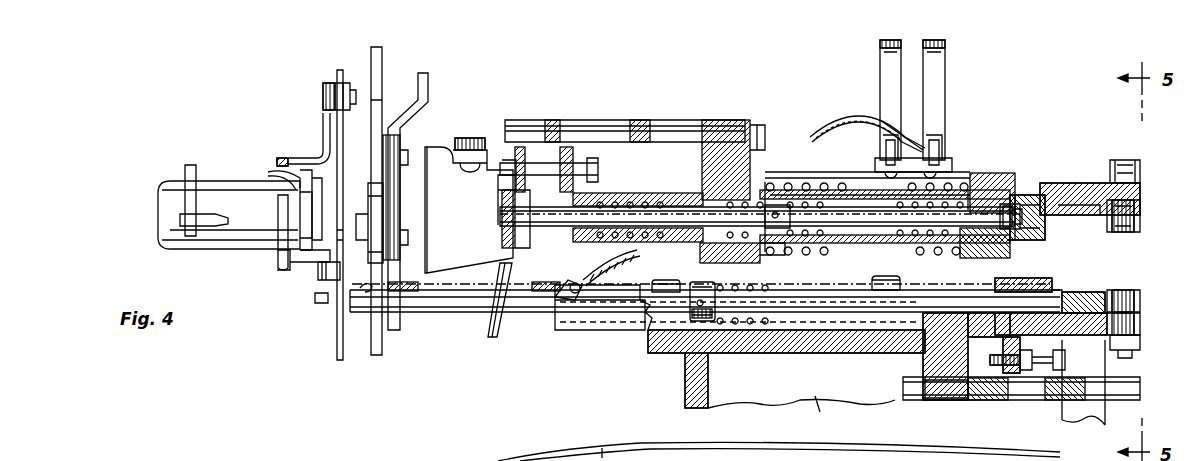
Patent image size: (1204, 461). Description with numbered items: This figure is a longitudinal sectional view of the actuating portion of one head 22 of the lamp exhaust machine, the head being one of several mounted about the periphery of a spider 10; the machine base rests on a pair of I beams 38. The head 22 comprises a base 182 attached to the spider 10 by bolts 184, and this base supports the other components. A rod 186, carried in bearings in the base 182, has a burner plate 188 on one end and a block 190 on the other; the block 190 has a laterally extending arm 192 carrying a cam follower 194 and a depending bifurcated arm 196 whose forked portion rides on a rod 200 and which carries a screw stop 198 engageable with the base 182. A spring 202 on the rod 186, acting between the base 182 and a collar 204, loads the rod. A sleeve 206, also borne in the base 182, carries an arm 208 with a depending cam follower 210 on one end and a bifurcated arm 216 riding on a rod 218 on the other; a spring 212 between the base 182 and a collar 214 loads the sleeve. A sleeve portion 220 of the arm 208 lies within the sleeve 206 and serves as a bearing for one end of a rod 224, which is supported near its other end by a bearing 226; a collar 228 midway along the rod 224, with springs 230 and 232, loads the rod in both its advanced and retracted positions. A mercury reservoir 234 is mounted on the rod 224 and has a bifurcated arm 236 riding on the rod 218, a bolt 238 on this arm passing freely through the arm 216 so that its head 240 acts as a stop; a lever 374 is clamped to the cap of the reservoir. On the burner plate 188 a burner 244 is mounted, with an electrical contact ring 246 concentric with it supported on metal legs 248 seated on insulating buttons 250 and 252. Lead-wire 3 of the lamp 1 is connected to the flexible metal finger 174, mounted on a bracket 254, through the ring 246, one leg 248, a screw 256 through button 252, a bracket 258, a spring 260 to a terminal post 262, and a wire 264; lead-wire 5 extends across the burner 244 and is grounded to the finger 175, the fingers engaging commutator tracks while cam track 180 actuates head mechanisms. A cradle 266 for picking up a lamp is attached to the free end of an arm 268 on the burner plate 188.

The lamp 1 is at (170, 203).
The lead-wire 3 is at (268, 172).
The lead-wire 5 is at (325, 245).
The spider 10 is at (822, 410).
The head 22 is at (755, 63).
The I beam 38 is at (428, 80).
The flexible metal finger 174 is at (945, 66).
The flexible metal finger 175 is at (880, 66).
The cam track 180 is at (1098, 292).
The base 182 is at (625, 325).
The bolt 184 is at (665, 280).
The rod 186 is at (443, 300).
The burner plate 188 is at (343, 265).
The block 190 is at (1040, 278).
The laterally extending arm 192 is at (1140, 324).
The cam follower 194 is at (1140, 300).
The bifurcated arm 196 is at (1003, 342).
The screw stop 198 is at (1050, 370).
The rod 200 is at (1140, 388).
The spring 202 is at (752, 320).
The collar 204 is at (700, 322).
The sleeve 206 is at (1024, 192).
The arm 208 is at (1058, 183).
The cam follower 210 is at (1140, 214).
The spring 212 is at (958, 178).
The collar 214 is at (770, 178).
The bifurcated arm 216 is at (562, 165).
The rod 218 is at (672, 128).
The sleeve portion 220 is at (1018, 228).
The rod 224 is at (855, 215).
The bearing 226 is at (572, 242).
The collar 228 is at (780, 243).
The spring 230 is at (633, 193).
The spring 232 is at (822, 207).
The mercury reservoir 234 is at (440, 160).
The bifurcated arm 236 is at (502, 160).
The bolt 238 is at (598, 168).
The head 240 is at (590, 160).
The burner 244 is at (318, 165).
The electrical contact ring 246 is at (278, 262).
The metal leg 248 is at (323, 125).
The insulating button 250 is at (335, 83).
The insulating button 252 is at (337, 318).
The bracket 254 is at (835, 178).
The screw 256 is at (318, 272).
The bracket 258 is at (367, 290).
The spring 260 is at (540, 292).
The terminal post 262 is at (576, 302).
The wire 264 is at (850, 118).
The cradle 266 is at (190, 165).
The arm 268 is at (210, 225).
The lever 374 is at (382, 60).